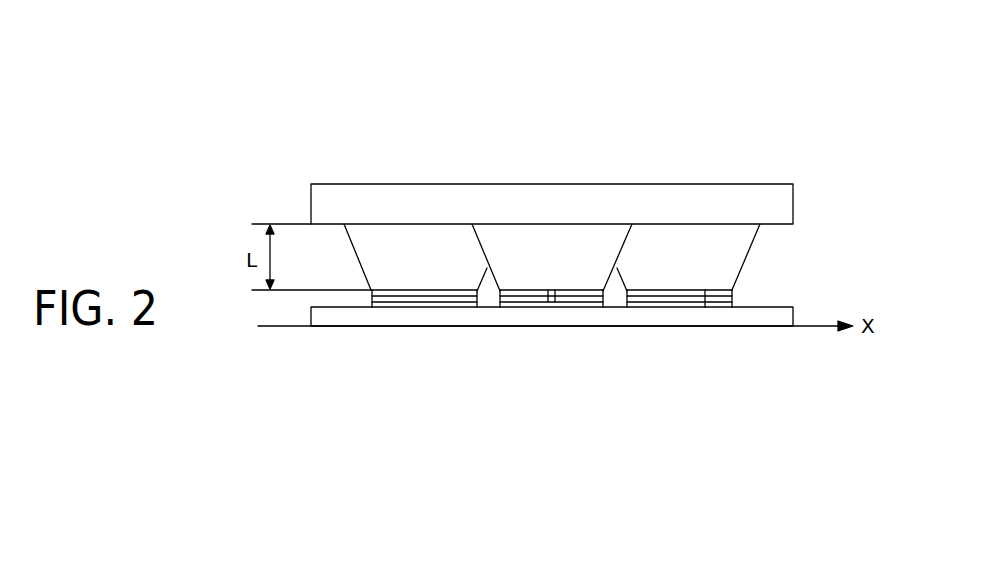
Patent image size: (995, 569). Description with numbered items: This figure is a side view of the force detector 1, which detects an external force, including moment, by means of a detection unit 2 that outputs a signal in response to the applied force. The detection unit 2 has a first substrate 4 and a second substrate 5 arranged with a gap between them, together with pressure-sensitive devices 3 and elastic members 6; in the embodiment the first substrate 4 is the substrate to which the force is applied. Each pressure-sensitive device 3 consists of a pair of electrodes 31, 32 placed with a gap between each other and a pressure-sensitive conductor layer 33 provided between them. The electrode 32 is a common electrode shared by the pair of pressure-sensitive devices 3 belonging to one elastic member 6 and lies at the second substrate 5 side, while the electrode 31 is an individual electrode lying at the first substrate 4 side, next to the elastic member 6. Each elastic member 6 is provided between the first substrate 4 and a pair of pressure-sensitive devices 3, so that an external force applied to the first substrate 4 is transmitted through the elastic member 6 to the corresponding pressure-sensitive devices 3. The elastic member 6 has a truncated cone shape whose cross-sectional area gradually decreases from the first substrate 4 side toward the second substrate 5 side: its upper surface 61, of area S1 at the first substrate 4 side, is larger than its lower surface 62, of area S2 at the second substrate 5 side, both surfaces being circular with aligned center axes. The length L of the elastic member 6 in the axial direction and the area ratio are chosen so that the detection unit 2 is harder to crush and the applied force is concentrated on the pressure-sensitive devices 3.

The force detector 1 is at (812, 93).
The detection unit 2 is at (724, 126).
The pressure-sensitive device 3 is at (698, 518).
The electrode 31 is at (405, 292).
The electrode 32 is at (441, 304).
The pressure-sensitive conductor layer 33 is at (422, 298).
The first substrate 4 is at (780, 197).
The second substrate 5 is at (783, 313).
The elastic member 6 is at (437, 243).
The upper surface 61 is at (382, 224).
The lower surface 62 is at (372, 308).